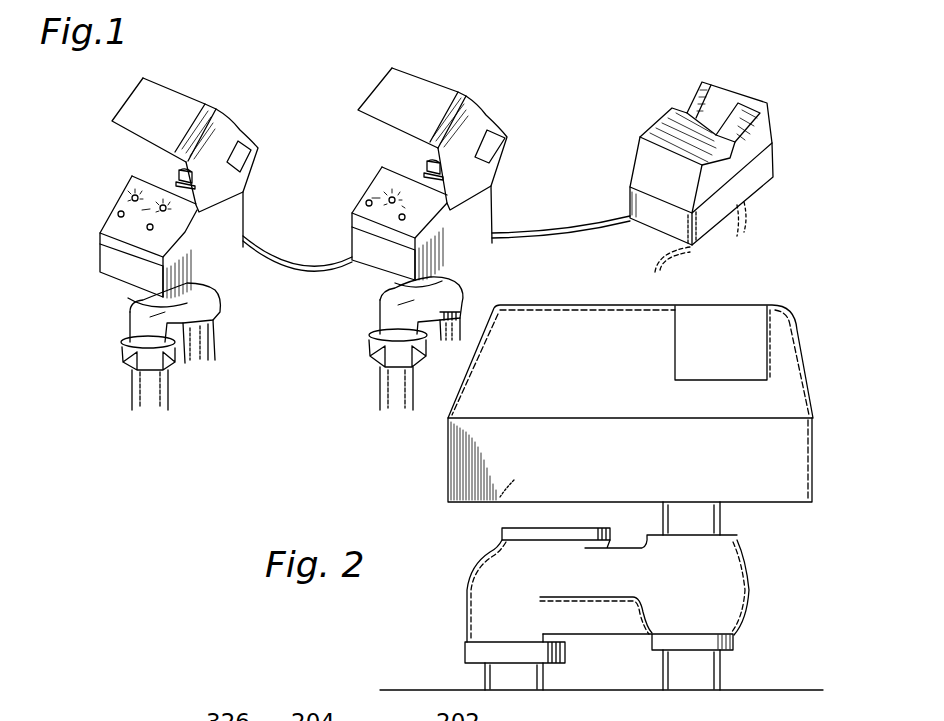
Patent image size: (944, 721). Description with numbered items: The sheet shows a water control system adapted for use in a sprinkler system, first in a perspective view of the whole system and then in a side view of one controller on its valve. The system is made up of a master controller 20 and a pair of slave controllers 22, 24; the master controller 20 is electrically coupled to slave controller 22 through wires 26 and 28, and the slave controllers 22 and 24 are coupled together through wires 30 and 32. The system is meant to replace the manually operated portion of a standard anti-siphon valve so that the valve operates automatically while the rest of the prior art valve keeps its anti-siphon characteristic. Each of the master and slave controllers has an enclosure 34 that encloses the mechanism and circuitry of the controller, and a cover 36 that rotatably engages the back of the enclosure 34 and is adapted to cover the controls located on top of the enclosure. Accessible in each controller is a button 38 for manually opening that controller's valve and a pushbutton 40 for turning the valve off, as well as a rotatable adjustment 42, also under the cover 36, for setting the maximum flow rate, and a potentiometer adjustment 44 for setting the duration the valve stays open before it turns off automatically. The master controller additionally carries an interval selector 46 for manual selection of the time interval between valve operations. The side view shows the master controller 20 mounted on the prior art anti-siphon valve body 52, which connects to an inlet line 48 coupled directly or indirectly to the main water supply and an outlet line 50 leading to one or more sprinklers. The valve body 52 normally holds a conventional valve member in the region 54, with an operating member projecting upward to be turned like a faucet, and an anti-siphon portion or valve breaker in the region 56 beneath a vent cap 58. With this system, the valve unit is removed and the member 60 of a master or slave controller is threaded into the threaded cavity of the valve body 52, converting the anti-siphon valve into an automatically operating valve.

In FIG. 1, the master controller 20 is at (196, 96).
In FIG. 2, the master controller 20 is at (718, 302).
In FIG. 1, the slave controller 22 is at (447, 88).
In FIG. 1, the slave controller 24 is at (726, 81).
In FIG. 1, the wire 26 is at (293, 262).
In FIG. 1, the wire 28 is at (312, 275).
In FIG. 1, the wire 30 is at (535, 234).
In FIG. 1, the wire 32 is at (570, 238).
In FIG. 1, the enclosure 34 is at (122, 278).
In FIG. 2, the enclosure 34 is at (447, 468).
In FIG. 1, the cover 36 is at (135, 104).
In FIG. 2, the cover 36 is at (808, 385).
In FIG. 1, the button 38 is at (117, 217).
In FIG. 1, the pushbutton 40 is at (146, 230).
In FIG. 1, the rotatable adjustment 42 is at (181, 178).
In FIG. 1, the potentiometer adjustment 44 is at (166, 212).
In FIG. 1, the interval selector 46 is at (130, 197).
In FIG. 2, the inlet line 48 is at (710, 671).
In FIG. 2, the outlet line 50 is at (495, 677).
In FIG. 2, the anti-siphon valve body 52 is at (755, 557).
In FIG. 2, the region 54 is at (742, 595).
In FIG. 2, the region 56 is at (497, 568).
In FIG. 2, the vent cap 58 is at (512, 532).
In FIG. 2, the member 60 is at (720, 520).